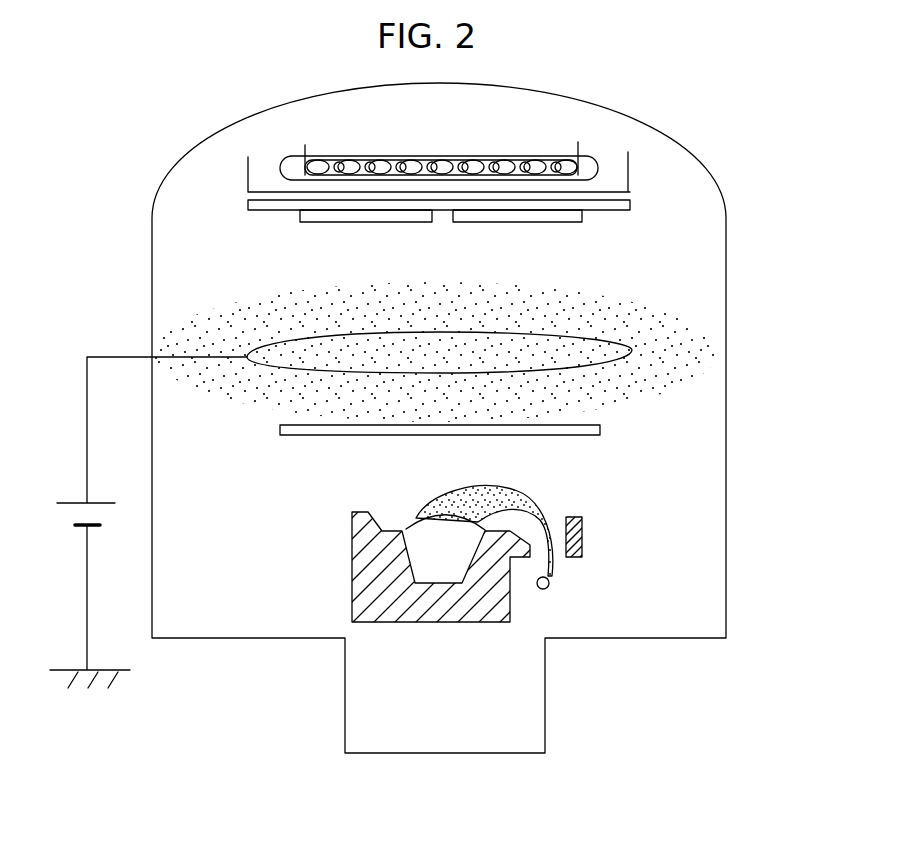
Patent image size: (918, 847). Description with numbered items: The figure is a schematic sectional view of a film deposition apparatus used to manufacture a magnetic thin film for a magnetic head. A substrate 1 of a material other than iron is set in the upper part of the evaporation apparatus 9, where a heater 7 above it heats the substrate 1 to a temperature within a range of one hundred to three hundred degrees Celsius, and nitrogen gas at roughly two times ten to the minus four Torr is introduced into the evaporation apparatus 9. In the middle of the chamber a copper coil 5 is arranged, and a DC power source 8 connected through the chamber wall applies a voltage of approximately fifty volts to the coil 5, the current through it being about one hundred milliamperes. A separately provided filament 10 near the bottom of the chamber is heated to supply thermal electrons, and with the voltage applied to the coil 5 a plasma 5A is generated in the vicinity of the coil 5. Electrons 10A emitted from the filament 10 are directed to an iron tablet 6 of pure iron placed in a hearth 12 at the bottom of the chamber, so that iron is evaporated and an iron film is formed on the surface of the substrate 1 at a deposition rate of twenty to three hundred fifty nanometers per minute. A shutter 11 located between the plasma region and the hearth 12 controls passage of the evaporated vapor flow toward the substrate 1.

The substrate 1 is at (320, 222).
The copper coil 5 is at (632, 348).
The plasma 5A is at (655, 392).
The iron tablet 6 is at (423, 532).
The heater 7 is at (527, 152).
The DC power source 8 is at (72, 499).
The evaporation apparatus 9 is at (158, 210).
The filament 10 is at (546, 590).
The electrons 10A is at (508, 490).
The shutter 11 is at (600, 430).
The hearth 12 is at (439, 606).